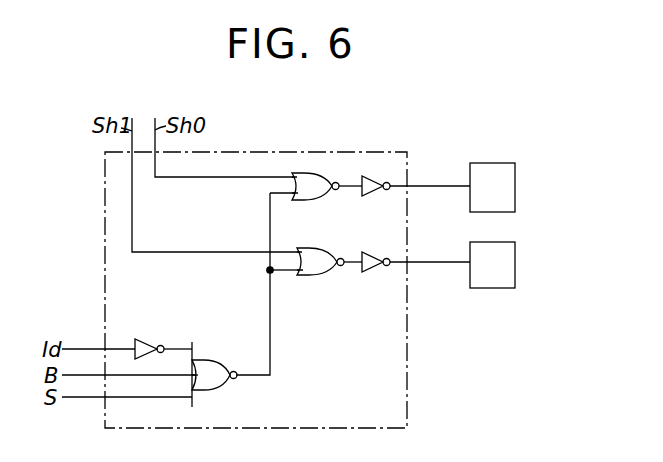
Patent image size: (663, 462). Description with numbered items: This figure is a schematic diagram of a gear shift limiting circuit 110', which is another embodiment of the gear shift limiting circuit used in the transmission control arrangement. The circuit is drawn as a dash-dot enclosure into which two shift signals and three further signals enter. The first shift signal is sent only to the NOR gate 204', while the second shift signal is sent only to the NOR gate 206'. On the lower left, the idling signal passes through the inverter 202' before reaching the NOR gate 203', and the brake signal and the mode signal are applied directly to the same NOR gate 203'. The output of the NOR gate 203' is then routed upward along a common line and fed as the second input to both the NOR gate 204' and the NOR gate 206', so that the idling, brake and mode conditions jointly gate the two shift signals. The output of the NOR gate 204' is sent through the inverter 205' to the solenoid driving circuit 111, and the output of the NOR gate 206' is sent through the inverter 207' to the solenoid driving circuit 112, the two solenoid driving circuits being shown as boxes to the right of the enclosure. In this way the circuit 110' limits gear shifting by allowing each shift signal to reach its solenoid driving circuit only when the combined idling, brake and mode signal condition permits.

The gear shift limiting circuit 110' is at (256, 265).
The solenoid driving circuit 111 is at (493, 187).
The solenoid driving circuit 112 is at (493, 265).
The inverter 202' is at (150, 333).
The NOR gate 203' is at (217, 368).
The NOR gate 204' is at (314, 201).
The inverter 205' is at (376, 203).
The NOR gate 206' is at (317, 278).
The inverter 207' is at (376, 280).